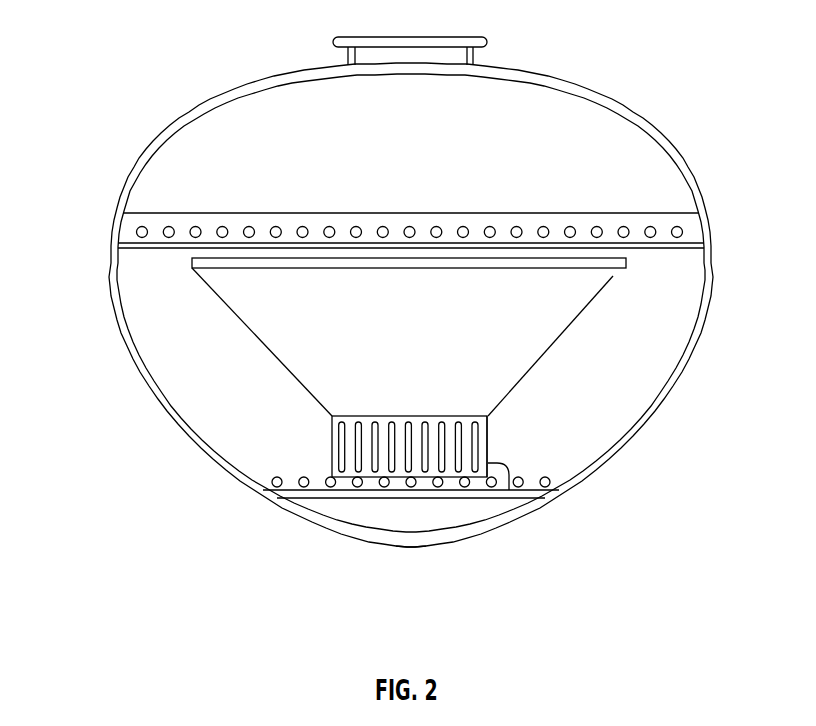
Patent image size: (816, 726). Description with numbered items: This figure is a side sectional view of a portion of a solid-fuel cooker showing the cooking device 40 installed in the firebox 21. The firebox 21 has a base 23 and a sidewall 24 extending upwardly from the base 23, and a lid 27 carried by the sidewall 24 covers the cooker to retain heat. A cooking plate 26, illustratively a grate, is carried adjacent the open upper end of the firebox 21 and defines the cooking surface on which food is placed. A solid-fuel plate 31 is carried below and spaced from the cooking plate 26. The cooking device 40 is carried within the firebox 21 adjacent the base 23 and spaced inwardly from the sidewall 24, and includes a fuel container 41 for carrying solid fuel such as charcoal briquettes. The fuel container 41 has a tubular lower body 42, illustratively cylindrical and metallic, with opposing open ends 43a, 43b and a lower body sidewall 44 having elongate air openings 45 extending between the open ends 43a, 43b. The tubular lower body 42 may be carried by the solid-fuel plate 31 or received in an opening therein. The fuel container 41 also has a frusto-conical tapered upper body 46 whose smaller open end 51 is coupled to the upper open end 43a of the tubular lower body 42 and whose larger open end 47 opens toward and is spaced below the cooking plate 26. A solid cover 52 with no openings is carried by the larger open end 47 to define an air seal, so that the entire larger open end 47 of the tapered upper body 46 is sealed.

The firebox 21 is at (142, 420).
The base 23 is at (388, 548).
The sidewall 24 is at (119, 318).
The cooking plate 26 is at (133, 250).
The lid 27 is at (213, 105).
The solid-fuel plate 31 is at (263, 500).
The cooking device 40 is at (238, 337).
The fuel container 41 is at (520, 391).
The tubular lower body 42 is at (330, 447).
The upper open end 43a is at (488, 416).
The lower open end 43b is at (509, 490).
The lower body sidewall 44 is at (351, 467).
The air openings 45 is at (362, 467).
The tapered upper body 46 is at (517, 327).
The larger open end 47 is at (613, 277).
The smaller open end 51 is at (332, 416).
The solid cover 52 is at (626, 268).